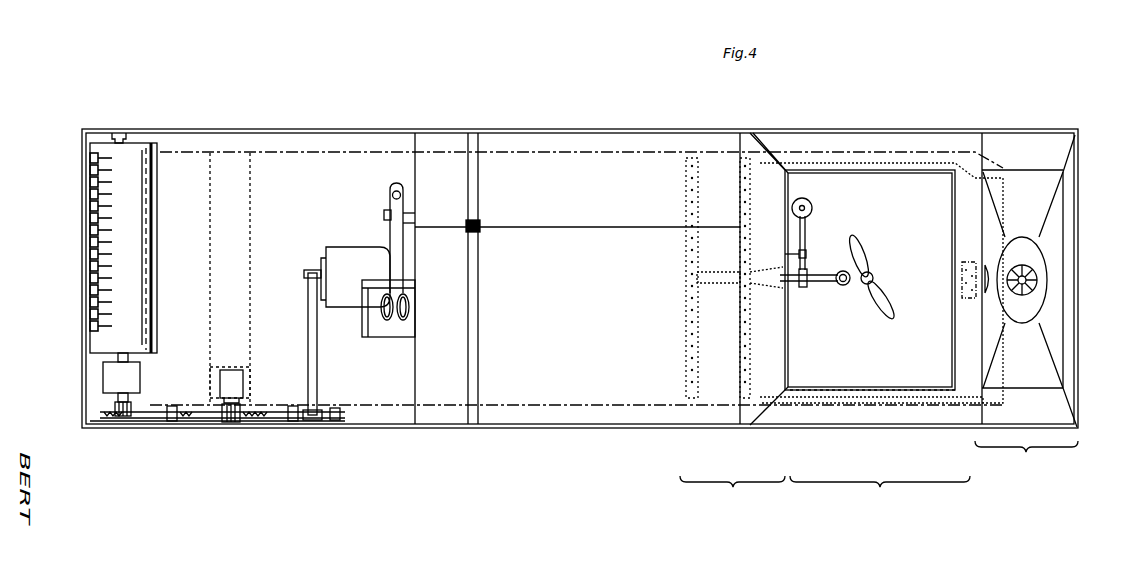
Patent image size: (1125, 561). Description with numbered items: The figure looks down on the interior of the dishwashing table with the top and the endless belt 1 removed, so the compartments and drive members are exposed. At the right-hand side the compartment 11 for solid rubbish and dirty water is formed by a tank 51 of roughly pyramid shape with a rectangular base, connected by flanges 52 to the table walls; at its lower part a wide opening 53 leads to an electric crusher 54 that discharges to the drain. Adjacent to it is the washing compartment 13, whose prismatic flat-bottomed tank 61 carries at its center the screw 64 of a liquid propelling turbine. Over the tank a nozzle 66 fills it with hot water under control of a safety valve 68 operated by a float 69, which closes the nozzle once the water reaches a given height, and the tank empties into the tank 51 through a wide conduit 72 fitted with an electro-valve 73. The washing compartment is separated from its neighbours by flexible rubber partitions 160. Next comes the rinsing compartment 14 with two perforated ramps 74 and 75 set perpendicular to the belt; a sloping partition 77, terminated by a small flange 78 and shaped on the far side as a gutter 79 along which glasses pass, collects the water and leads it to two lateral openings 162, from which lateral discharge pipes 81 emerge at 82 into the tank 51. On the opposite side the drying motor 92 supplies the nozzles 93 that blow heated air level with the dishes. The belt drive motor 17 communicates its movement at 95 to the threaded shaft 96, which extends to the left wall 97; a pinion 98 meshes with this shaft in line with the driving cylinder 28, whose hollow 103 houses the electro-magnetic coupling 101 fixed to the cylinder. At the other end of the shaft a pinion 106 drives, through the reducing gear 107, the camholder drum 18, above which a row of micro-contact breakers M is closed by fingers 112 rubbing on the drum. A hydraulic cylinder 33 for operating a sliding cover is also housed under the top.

The endless belt 1 is at (438, 152).
The compartment 11 is at (1026, 458).
The washing compartment 13 is at (880, 493).
The rinsing compartment 14 is at (732, 493).
The motor 17 is at (338, 258).
The camholder drum 18 is at (140, 292).
The driving cylinder 28 is at (243, 237).
The cylinder 33 is at (397, 233).
The tank 51 is at (1040, 210).
The flanges 52 is at (1055, 150).
The wide opening 53 is at (1028, 288).
The electric crusher 54 is at (1030, 274).
The tank 61 is at (853, 378).
The screw 64 is at (886, 303).
The nozzle 66 is at (824, 274).
The safety valve 68 is at (804, 287).
The float 69 is at (810, 204).
The wide conduit 72 is at (987, 266).
The electro-valve 73 is at (968, 260).
The perforated ramp 74 is at (748, 202).
The perforated ramp 75 is at (688, 196).
The partition 77 is at (720, 285).
The small flange 78 is at (476, 342).
The gutter 79 is at (548, 227).
The lateral discharge pipes 81 is at (832, 148).
The discharge outlet 82 is at (985, 172).
The motor 92 is at (376, 320).
The nozzles 93 is at (411, 302).
The drive connection 95 is at (313, 421).
The threaded shaft 96 is at (162, 420).
The left wall 97 is at (87, 404).
The pinion 98 is at (229, 423).
The electro-magnetic coupling 101 is at (238, 382).
The hollow 103 is at (218, 368).
The pinion 106 is at (122, 422).
The reducing gear 107 is at (113, 373).
The fingers 112 is at (96, 240).
The flexible partitions 160 is at (776, 159).
The lateral openings 162 is at (770, 400).
The micro-contact breakers M is at (97, 300).